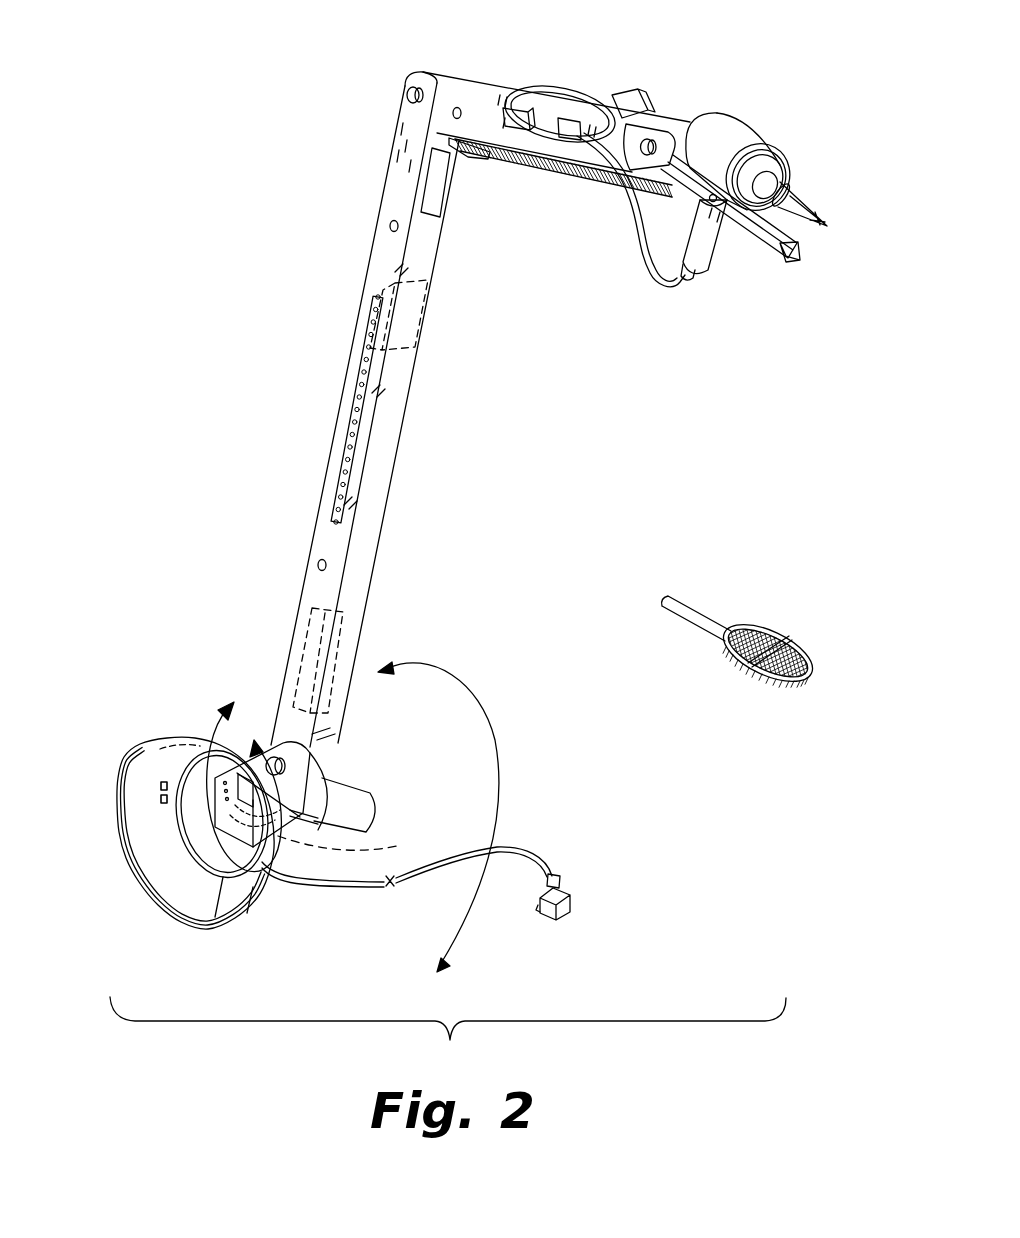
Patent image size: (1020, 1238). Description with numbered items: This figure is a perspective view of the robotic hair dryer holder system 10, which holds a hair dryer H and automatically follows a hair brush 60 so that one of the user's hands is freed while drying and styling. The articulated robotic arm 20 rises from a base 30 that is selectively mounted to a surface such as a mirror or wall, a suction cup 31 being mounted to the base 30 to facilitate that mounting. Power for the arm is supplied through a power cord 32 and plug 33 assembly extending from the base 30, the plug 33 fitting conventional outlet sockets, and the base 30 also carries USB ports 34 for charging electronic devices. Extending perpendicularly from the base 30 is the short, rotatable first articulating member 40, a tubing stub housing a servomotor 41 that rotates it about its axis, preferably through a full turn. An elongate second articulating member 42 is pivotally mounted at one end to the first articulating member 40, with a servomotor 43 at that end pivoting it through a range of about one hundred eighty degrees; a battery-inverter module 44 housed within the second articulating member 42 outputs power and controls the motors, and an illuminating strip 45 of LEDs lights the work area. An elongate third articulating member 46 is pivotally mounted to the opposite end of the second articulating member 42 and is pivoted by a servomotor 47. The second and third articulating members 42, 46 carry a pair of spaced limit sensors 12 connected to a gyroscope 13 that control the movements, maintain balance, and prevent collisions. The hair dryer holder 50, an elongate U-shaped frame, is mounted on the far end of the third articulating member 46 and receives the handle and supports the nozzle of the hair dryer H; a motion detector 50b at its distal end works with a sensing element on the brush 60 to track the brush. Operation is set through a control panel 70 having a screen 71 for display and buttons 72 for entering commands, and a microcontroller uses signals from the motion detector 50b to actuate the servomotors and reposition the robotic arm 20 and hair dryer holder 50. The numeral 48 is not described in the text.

The robotic hair dryer holder system 10 is at (742, 440).
The limit sensors 12 is at (457, 106).
The gyroscope 13 is at (430, 312).
The robotic arm 20 is at (313, 293).
The base 30 is at (193, 900).
The suction cup 31 is at (145, 893).
The power cord 32 is at (548, 850).
The plug 33 is at (572, 907).
The USB ports 34 is at (162, 775).
The first articulating member 40 is at (270, 738).
The servomotor 41 is at (352, 843).
The second articulating member 42 is at (395, 480).
The servomotor 43 is at (380, 801).
The battery-inverter module 44 is at (348, 618).
The illuminating strip 45 is at (343, 458).
The third articulating member 46 is at (487, 85).
The servomotor 47 is at (482, 160).
The rail 48 is at (548, 175).
The hair dryer holder 50 is at (750, 232).
The motion detector 50b is at (792, 263).
The hair brush 60 is at (765, 630).
The control panel 70 is at (262, 705).
The screen 71 is at (262, 812).
The buttons 72 is at (244, 787).
The hair dryer H is at (752, 125).